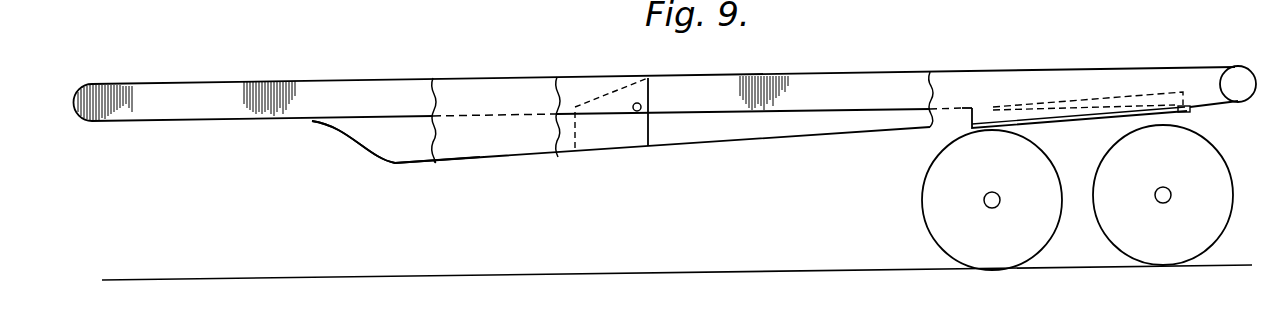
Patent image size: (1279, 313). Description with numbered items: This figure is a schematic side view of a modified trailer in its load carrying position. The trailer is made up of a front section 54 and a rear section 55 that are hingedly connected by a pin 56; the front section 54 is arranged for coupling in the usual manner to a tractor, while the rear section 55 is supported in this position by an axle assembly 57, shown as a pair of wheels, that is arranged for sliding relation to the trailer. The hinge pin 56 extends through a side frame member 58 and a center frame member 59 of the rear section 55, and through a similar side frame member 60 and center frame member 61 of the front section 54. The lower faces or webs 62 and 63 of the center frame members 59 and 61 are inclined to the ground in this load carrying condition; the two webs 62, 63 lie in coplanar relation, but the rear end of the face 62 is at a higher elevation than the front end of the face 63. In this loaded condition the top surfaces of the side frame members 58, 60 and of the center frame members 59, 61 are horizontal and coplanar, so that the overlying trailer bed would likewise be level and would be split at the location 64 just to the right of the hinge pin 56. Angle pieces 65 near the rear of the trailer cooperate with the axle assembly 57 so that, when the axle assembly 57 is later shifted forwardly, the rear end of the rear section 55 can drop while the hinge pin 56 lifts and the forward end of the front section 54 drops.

The front section 54 is at (404, 78).
The rear section 55 is at (886, 62).
The pin 56 is at (642, 106).
The axle assembly 57 is at (920, 208).
The side frame member 58 is at (741, 75).
The center frame member 59 is at (996, 70).
The side frame member 60 is at (315, 84).
The center frame member 61 is at (480, 80).
The lower face or web 62 is at (820, 137).
The lower face or web 63 is at (503, 160).
The location 64 is at (652, 81).
The angle pieces 65 is at (1191, 111).